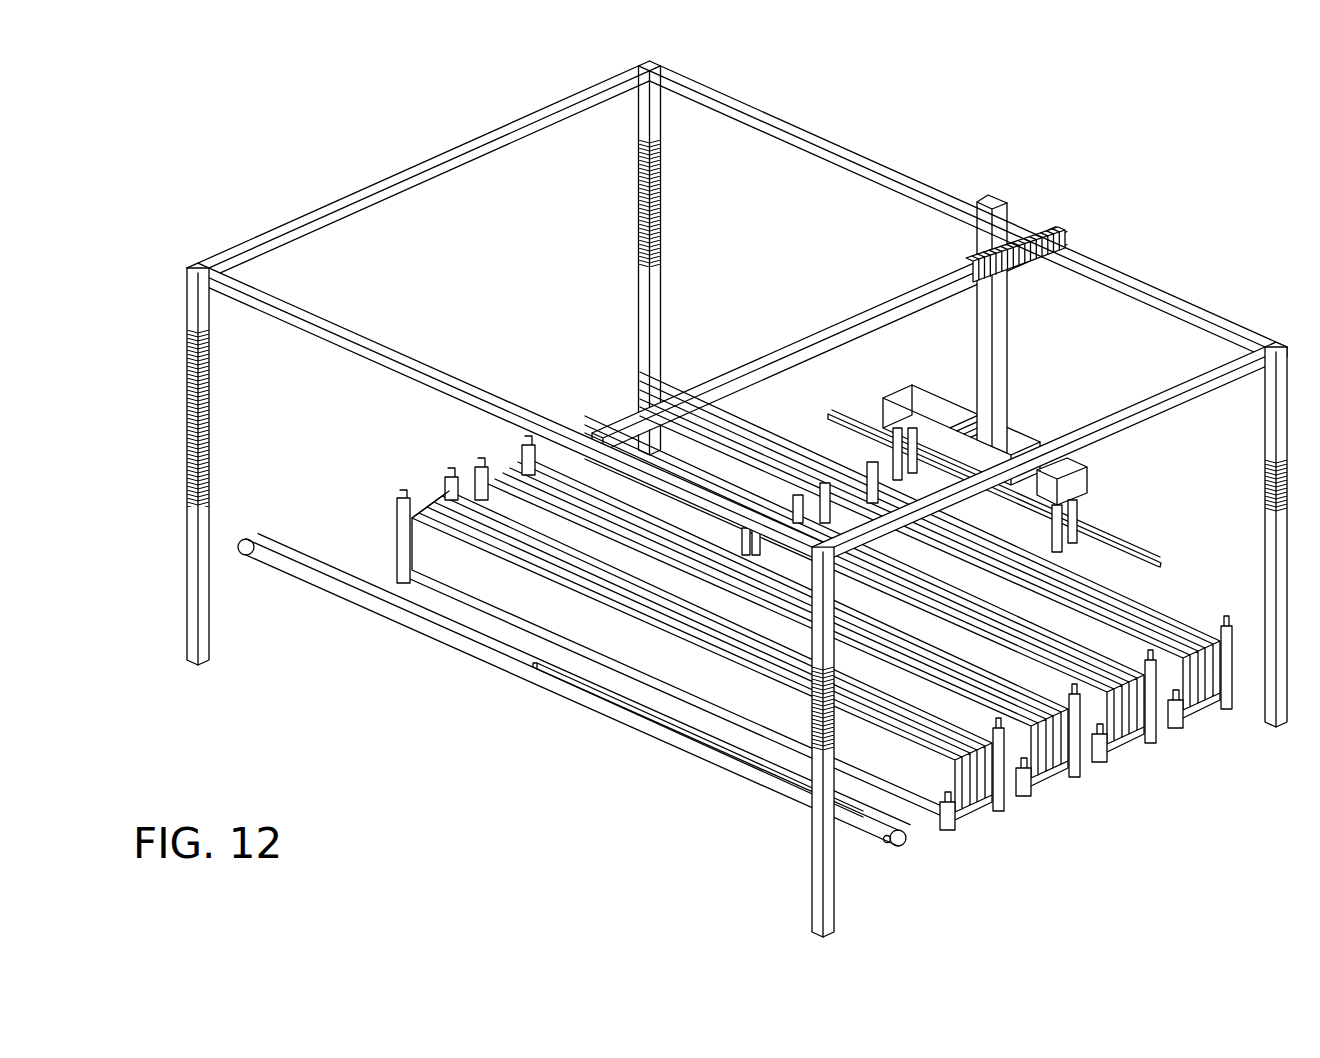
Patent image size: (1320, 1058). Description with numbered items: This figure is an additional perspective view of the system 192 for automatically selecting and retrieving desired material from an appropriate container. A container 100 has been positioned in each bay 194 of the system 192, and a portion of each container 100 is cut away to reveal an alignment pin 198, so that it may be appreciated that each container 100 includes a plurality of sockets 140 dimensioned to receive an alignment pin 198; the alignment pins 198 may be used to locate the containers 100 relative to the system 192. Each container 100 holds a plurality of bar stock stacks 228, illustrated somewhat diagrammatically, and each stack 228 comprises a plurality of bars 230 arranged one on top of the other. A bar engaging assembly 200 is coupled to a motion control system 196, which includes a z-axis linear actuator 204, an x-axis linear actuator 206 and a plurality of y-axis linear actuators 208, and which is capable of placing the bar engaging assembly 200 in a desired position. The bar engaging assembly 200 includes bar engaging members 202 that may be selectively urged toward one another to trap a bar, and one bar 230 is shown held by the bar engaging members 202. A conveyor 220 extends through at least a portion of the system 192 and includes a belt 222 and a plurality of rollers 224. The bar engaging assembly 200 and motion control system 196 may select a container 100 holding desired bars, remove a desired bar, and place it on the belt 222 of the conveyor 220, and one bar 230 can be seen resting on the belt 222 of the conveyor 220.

The container 100 is at (970, 815).
The socket 140 is at (814, 667).
The system 192 is at (567, 728).
The bay 194 is at (814, 643).
The motion control system 196 is at (1029, 213).
The alignment pin 198 is at (1178, 698).
The bar engaging assembly 200 is at (1030, 411).
The bar engaging member 202 is at (1088, 513).
The z-axis linear actuator 204 is at (1008, 320).
The x-axis linear actuator 206 is at (818, 335).
The y-axis linear actuator 208 is at (840, 140).
The conveyor 220 is at (567, 728).
The belt 222 is at (472, 660).
The roller 224 is at (241, 553).
The bar stock stack 228 is at (442, 498).
The bar 230 is at (1140, 547).